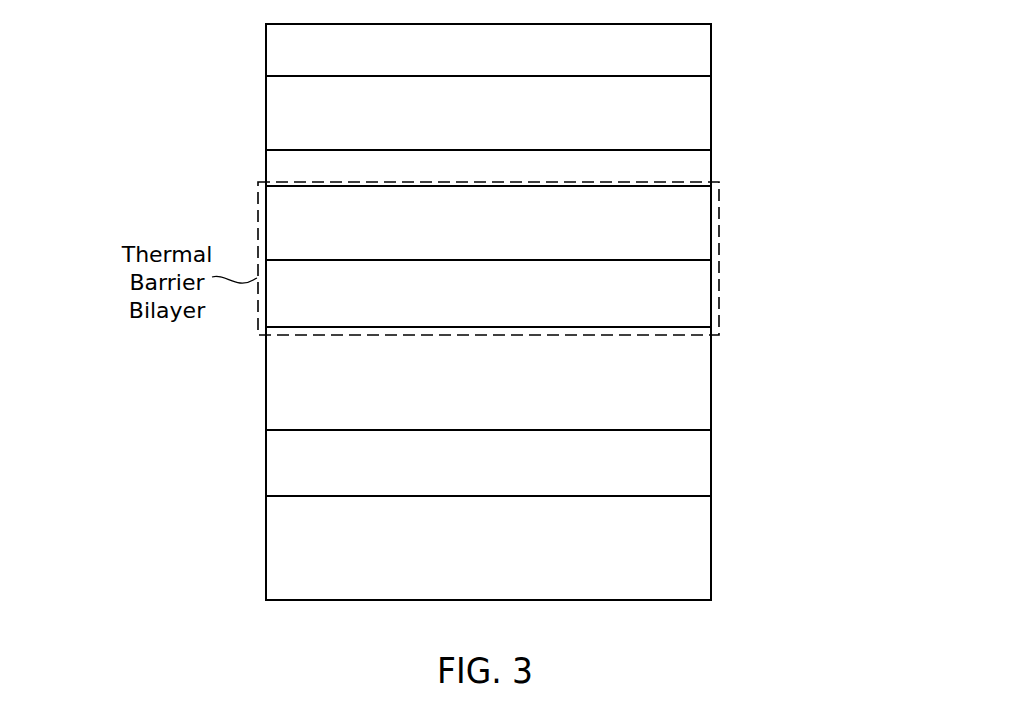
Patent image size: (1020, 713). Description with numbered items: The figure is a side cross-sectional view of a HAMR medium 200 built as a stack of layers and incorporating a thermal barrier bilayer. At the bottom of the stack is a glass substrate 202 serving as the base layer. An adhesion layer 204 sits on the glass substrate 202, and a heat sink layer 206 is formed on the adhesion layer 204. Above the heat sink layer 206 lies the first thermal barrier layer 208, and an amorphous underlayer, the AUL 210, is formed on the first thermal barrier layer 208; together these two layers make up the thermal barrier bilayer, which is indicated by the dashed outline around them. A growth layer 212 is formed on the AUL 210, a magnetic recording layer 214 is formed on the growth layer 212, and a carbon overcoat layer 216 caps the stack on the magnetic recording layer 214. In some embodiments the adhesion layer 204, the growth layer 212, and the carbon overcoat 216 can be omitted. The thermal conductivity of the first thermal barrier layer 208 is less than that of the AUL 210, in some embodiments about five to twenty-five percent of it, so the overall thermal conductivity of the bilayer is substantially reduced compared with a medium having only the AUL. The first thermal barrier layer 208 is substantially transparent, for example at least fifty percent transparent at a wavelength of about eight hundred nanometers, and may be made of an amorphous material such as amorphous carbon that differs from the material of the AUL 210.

The HAMR medium 200 is at (168, 74).
The glass substrate 202 is at (711, 547).
The adhesion layer 204 is at (711, 462).
The heat sink layer 206 is at (711, 380).
The first thermal barrier layer 208 is at (711, 292).
The amorphous underlayer (AUL) 210 is at (711, 222).
The growth layer 212 is at (711, 168).
The magnetic recording layer 214 is at (711, 113).
The carbon overcoat layer 216 is at (711, 50).